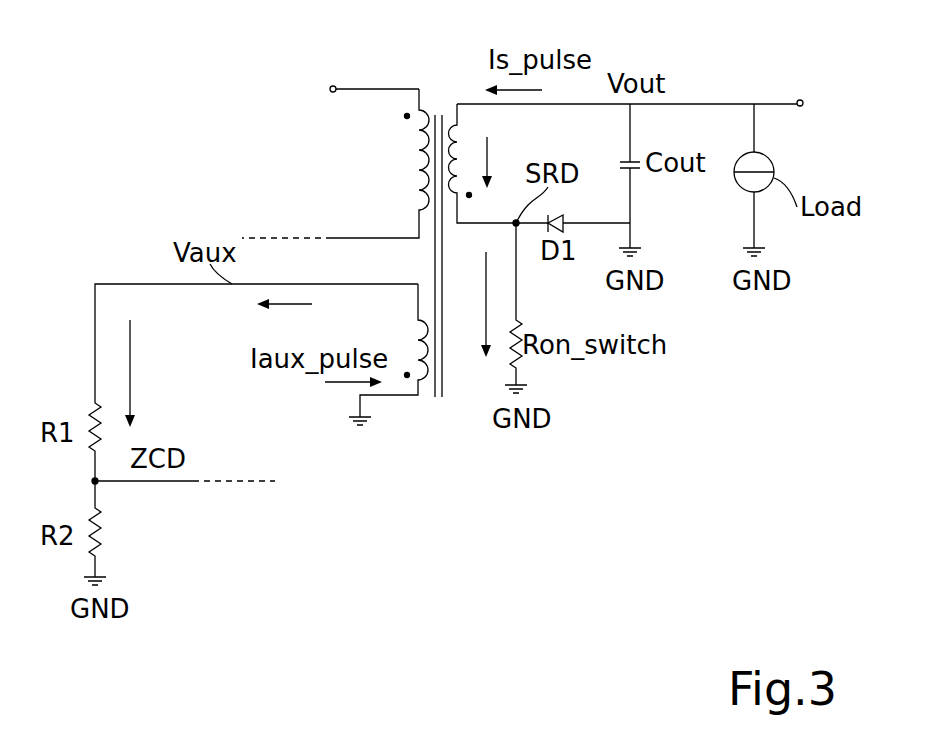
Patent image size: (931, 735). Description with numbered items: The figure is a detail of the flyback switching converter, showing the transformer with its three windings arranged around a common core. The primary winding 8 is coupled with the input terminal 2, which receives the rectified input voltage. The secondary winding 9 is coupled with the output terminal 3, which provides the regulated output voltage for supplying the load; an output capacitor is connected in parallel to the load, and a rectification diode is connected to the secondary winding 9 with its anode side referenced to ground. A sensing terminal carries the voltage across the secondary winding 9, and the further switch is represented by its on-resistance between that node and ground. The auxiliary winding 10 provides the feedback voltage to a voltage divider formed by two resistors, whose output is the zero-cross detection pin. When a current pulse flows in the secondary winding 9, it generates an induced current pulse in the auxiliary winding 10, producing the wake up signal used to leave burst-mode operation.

The input terminal 2 is at (332, 86).
The output terminal 3 is at (798, 100).
The primary winding 8 is at (403, 110).
The secondary winding 9 is at (457, 100).
The auxiliary winding 10 is at (420, 398).